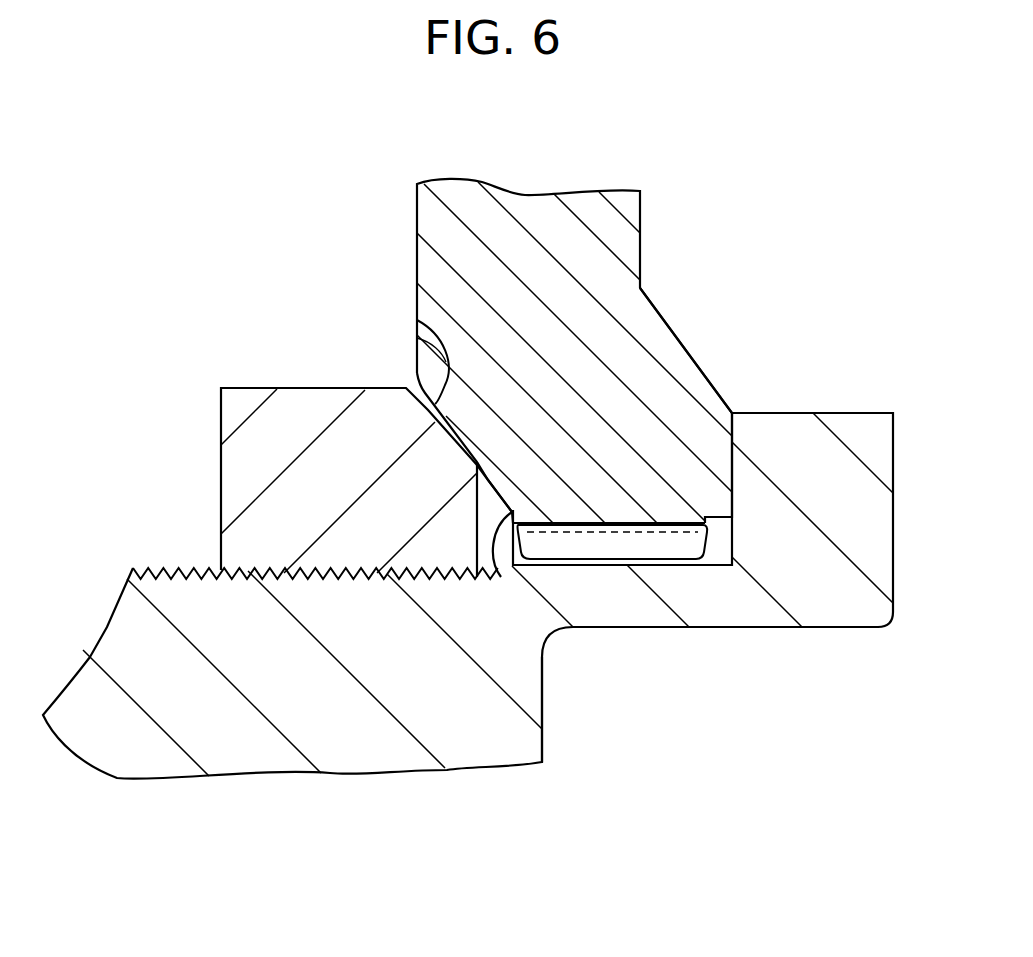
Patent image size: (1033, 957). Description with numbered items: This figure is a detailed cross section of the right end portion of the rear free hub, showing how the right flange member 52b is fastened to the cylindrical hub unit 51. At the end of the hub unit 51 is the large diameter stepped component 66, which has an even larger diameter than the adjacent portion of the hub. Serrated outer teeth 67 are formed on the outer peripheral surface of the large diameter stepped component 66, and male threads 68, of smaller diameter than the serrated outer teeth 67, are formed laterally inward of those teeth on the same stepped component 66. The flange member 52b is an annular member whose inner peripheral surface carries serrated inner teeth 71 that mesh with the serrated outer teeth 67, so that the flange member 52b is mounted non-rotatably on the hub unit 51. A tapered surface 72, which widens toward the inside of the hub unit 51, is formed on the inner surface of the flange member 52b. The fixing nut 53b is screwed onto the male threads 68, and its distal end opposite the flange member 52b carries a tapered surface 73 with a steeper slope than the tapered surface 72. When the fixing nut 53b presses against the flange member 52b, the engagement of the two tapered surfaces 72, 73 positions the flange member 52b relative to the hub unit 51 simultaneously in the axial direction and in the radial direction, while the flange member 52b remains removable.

The hub unit 51 is at (112, 655).
The flange member 52b is at (636, 221).
The fixing nut 53b is at (300, 410).
The large diameter stepped component 66 is at (650, 493).
The serrated outer teeth 67 is at (712, 560).
The male threads 68 is at (180, 568).
The serrated inner teeth 71 is at (668, 557).
The tapered surface 72 is at (500, 574).
The tapered surface 73 is at (417, 318).